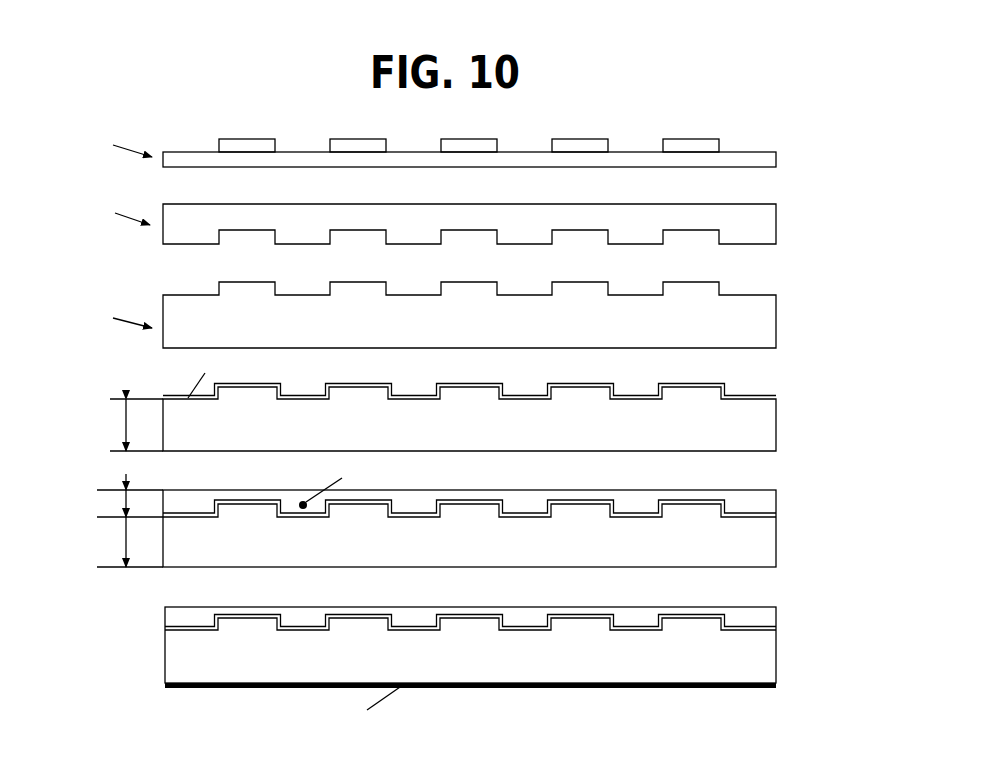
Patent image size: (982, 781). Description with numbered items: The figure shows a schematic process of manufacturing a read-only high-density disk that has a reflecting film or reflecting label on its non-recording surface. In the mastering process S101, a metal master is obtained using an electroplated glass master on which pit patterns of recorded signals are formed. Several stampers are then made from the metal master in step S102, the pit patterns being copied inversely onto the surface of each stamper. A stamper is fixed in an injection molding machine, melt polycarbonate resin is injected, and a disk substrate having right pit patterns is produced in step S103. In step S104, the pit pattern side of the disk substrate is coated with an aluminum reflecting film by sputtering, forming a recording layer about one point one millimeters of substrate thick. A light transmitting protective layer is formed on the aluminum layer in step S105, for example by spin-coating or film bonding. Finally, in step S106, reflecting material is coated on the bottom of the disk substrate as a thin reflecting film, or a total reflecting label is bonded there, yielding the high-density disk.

The mastering process S101 is at (450, 147).
The stamper making step S102 is at (450, 219).
The disk substrate producing step S103 is at (443, 315).
The recording layer coating step S104 is at (451, 405).
The protective layer forming step S105 is at (451, 513).
The reflecting film or label forming step S106 is at (509, 669).